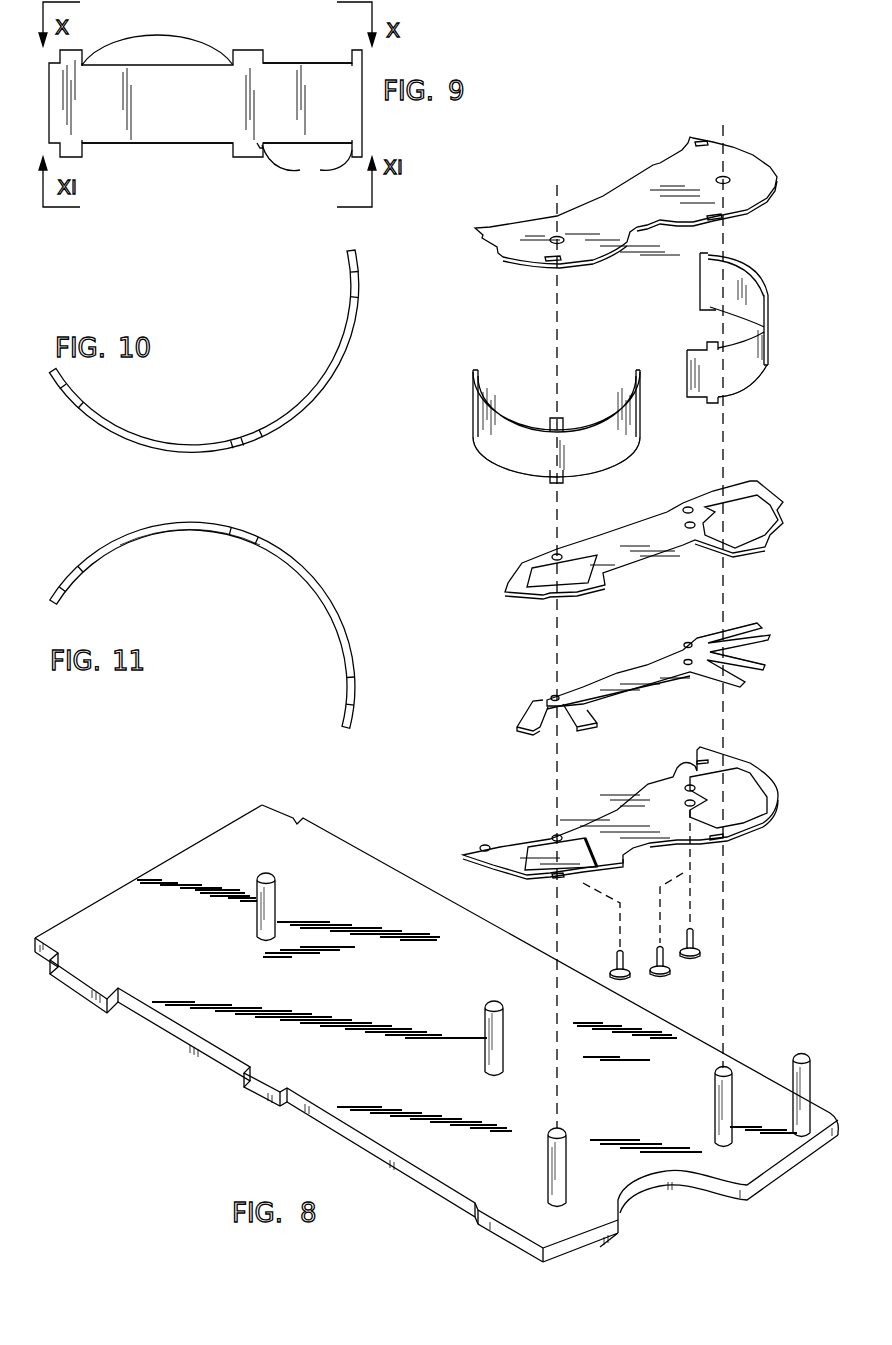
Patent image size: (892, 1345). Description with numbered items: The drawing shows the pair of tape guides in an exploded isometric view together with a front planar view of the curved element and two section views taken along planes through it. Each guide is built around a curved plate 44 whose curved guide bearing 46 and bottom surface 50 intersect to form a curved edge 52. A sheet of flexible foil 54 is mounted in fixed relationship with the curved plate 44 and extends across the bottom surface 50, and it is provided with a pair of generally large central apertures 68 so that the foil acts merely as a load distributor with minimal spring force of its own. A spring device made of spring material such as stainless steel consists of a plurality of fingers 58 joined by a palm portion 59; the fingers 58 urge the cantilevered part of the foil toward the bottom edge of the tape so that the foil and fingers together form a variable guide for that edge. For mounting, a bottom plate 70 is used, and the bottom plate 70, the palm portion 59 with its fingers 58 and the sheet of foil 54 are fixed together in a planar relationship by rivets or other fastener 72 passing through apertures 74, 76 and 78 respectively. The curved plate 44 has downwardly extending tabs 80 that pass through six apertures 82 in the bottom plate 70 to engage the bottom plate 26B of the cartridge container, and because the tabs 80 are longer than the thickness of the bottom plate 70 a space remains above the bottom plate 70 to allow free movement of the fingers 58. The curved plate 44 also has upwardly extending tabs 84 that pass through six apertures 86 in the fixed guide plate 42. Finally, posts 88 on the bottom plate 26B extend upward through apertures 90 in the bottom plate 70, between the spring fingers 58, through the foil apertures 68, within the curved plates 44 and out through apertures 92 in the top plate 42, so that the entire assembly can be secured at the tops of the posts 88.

In FIG. 8, the bottom plate of the cartridge container 26B is at (331, 884).
In FIG. 8, the fixed guide plate 42 is at (644, 182).
In FIG. 9, the curved plate 44 is at (160, 112).
In FIG. 8, the curved plate 44 is at (473, 410).
In FIG. 9, the curved guide bearing 46 is at (308, 72).
In FIG. 8, the curved guide bearing 46 is at (505, 458).
In FIG. 9, the bottom surface 50 is at (153, 145).
In FIG. 11, the bottom surface 50 is at (166, 531).
In FIG. 10, the curved edge 52 is at (203, 351).
In FIG. 11, the curved edge 52 is at (318, 580).
In FIG. 8, the sheet of flexible foil 54 is at (616, 535).
In FIG. 8, the fingers 58 is at (770, 665).
In FIG. 8, the palm portion 59 is at (625, 670).
In FIG. 8, the central apertures 68 is at (535, 578).
In FIG. 8, the bottom plate 70 is at (633, 808).
In FIG. 8, the rivets or other fastener 72 is at (615, 958).
In FIG. 8, the apertures 74 is at (555, 835).
In FIG. 8, the apertures 76 is at (686, 641).
In FIG. 8, the apertures 78 is at (690, 505).
In FIG. 9, the downwardly extending tabs 80 is at (307, 168).
In FIG. 8, the apertures 82 is at (485, 845).
In FIG. 9, the upwardly extending tabs 84 is at (157, 37).
In FIG. 8, the apertures 86 is at (632, 226).
In FIG. 8, the posts 88 is at (546, 1162).
In FIG. 8, the apertures 90 is at (745, 810).
In FIG. 8, the apertures 92 is at (735, 178).